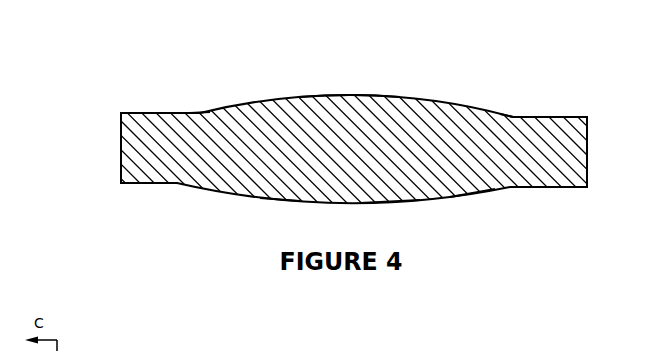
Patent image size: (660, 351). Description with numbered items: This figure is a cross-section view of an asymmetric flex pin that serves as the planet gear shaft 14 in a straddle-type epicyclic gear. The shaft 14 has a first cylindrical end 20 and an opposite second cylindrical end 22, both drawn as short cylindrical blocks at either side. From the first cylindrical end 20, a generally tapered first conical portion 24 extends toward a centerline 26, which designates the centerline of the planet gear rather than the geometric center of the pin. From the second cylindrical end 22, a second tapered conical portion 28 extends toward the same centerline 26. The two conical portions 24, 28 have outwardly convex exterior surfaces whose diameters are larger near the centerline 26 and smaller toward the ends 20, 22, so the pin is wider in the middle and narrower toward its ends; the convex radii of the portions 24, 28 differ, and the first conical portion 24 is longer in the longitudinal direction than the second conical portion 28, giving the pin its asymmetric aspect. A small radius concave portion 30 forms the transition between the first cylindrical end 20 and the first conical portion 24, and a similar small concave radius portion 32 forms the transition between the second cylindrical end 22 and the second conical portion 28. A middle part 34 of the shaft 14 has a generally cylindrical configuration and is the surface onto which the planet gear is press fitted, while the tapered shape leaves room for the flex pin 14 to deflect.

The planet gear shaft 14 is at (120, 160).
The first cylindrical end 20 is at (140, 184).
The second cylindrical end 22 is at (573, 188).
The first conical portion 24 is at (278, 199).
The centerline 26 is at (355, 95).
The second conical portion 28 is at (472, 195).
The small radius concave portion 30 is at (200, 111).
The small concave radius portion 32 is at (515, 115).
The middle part 34 is at (400, 204).